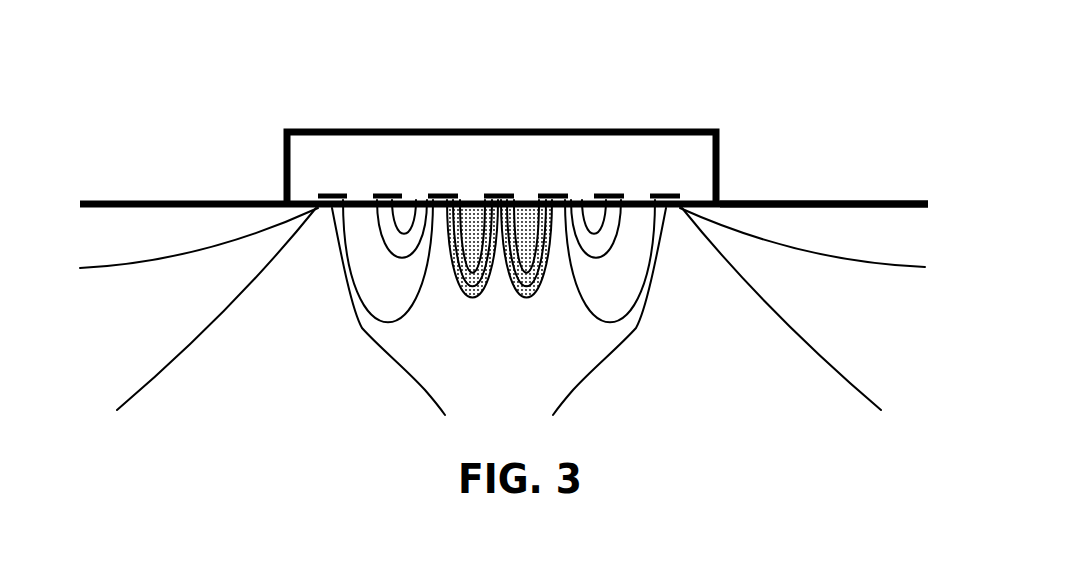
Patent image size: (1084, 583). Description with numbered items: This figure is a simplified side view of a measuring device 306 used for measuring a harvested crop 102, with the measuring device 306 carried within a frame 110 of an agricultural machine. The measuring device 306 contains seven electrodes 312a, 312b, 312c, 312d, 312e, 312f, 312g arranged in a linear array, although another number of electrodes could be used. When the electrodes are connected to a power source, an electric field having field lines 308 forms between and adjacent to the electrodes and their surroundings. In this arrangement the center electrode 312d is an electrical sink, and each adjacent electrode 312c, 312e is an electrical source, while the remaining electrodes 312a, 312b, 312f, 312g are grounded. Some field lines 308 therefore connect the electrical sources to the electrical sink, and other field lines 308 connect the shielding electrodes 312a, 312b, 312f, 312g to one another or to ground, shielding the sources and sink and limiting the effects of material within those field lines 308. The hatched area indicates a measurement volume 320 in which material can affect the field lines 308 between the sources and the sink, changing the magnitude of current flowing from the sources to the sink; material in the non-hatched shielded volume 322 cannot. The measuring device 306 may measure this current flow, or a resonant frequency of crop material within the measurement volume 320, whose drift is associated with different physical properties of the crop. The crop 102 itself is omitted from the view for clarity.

The harvested crop 102 is at (115, 242).
The frame 110 is at (900, 198).
The measuring device 306 is at (285, 178).
The field lines 308 is at (240, 238).
The electrode 312a is at (320, 192).
The electrode 312b is at (377, 192).
The electrode 312c is at (440, 192).
The center electrode 312d is at (493, 192).
The electrode 312e is at (547, 192).
The electrode 312f is at (603, 192).
The electrode 312g is at (670, 192).
The measurement volume 320 is at (473, 198).
The shielded volume 322 is at (676, 371).